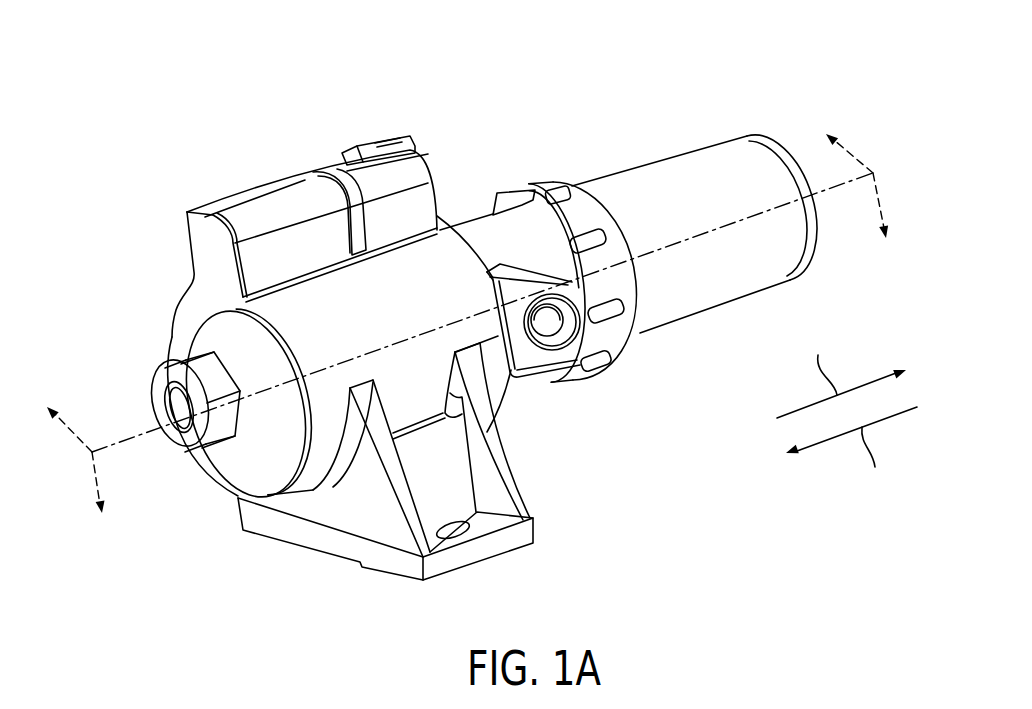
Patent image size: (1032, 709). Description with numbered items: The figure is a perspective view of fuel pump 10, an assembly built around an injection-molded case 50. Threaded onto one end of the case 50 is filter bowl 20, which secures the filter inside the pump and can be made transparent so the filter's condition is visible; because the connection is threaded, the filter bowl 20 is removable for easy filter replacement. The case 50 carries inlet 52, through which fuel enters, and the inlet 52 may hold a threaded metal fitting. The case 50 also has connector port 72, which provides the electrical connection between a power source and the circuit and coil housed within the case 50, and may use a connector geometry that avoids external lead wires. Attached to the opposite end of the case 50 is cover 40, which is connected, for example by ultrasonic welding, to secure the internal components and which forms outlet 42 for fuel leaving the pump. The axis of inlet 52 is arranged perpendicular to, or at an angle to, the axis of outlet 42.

The fuel pump 10 is at (712, 83).
The filter bowl 20 is at (690, 178).
The cover 40 is at (365, 396).
The outlet 42 is at (177, 402).
The case 50 is at (345, 199).
The inlet 52 is at (547, 328).
The connector port 72 is at (438, 176).